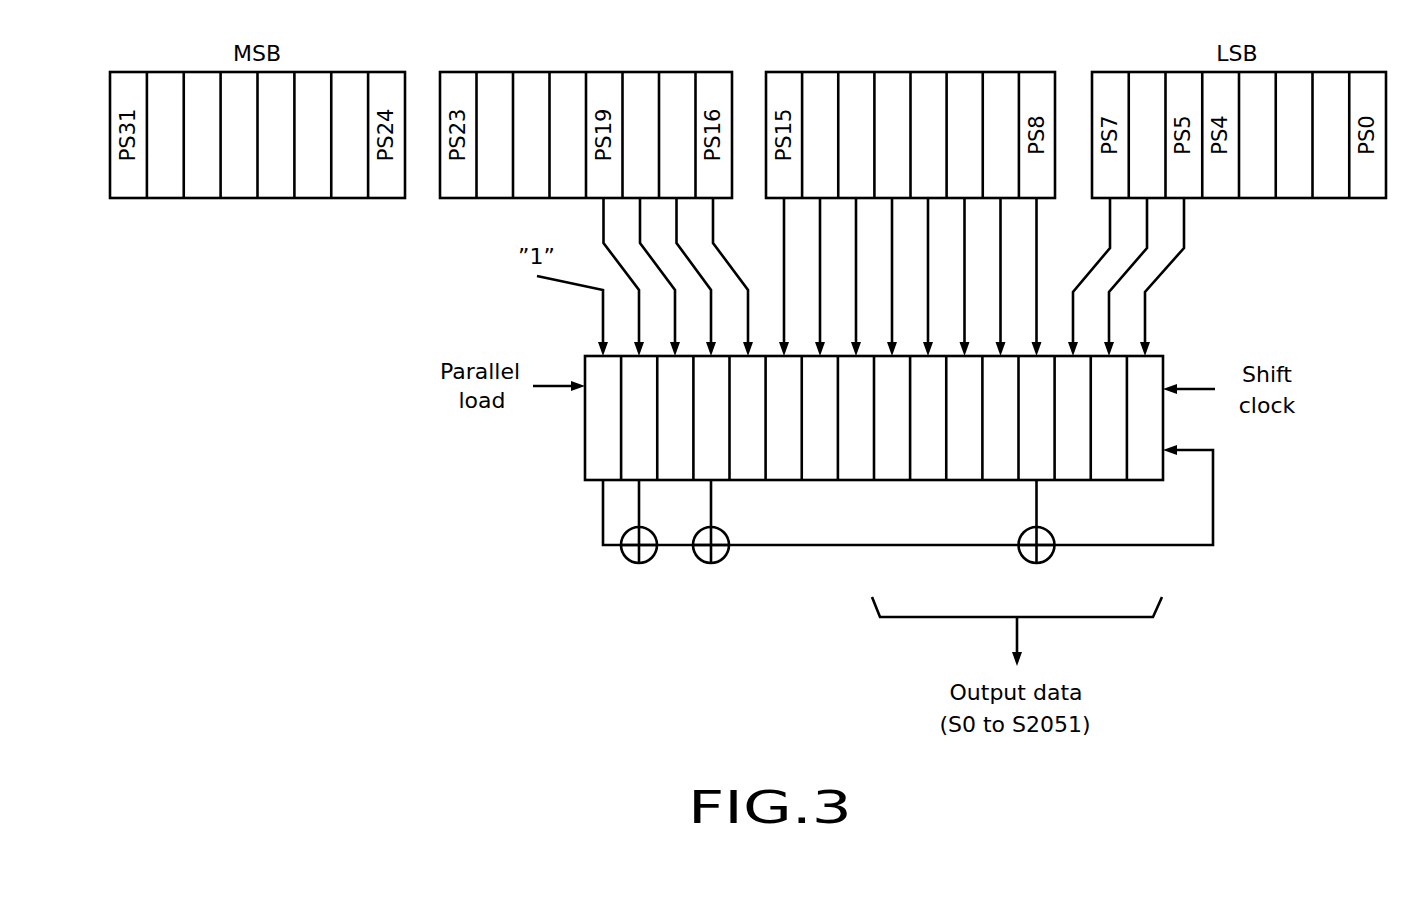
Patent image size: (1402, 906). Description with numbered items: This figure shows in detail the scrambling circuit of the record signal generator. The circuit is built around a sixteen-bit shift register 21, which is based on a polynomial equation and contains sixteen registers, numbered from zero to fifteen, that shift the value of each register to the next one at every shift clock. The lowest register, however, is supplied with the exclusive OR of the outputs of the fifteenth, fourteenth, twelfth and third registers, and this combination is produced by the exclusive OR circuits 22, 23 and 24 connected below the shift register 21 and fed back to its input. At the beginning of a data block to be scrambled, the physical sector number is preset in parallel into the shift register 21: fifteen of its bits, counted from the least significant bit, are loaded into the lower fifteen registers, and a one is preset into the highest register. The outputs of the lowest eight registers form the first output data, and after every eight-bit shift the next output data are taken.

The shift register 21 is at (585, 466).
The exclusive OR circuit 22 is at (654, 558).
The exclusive OR circuit 23 is at (726, 558).
The exclusive OR circuit 24 is at (1051, 557).